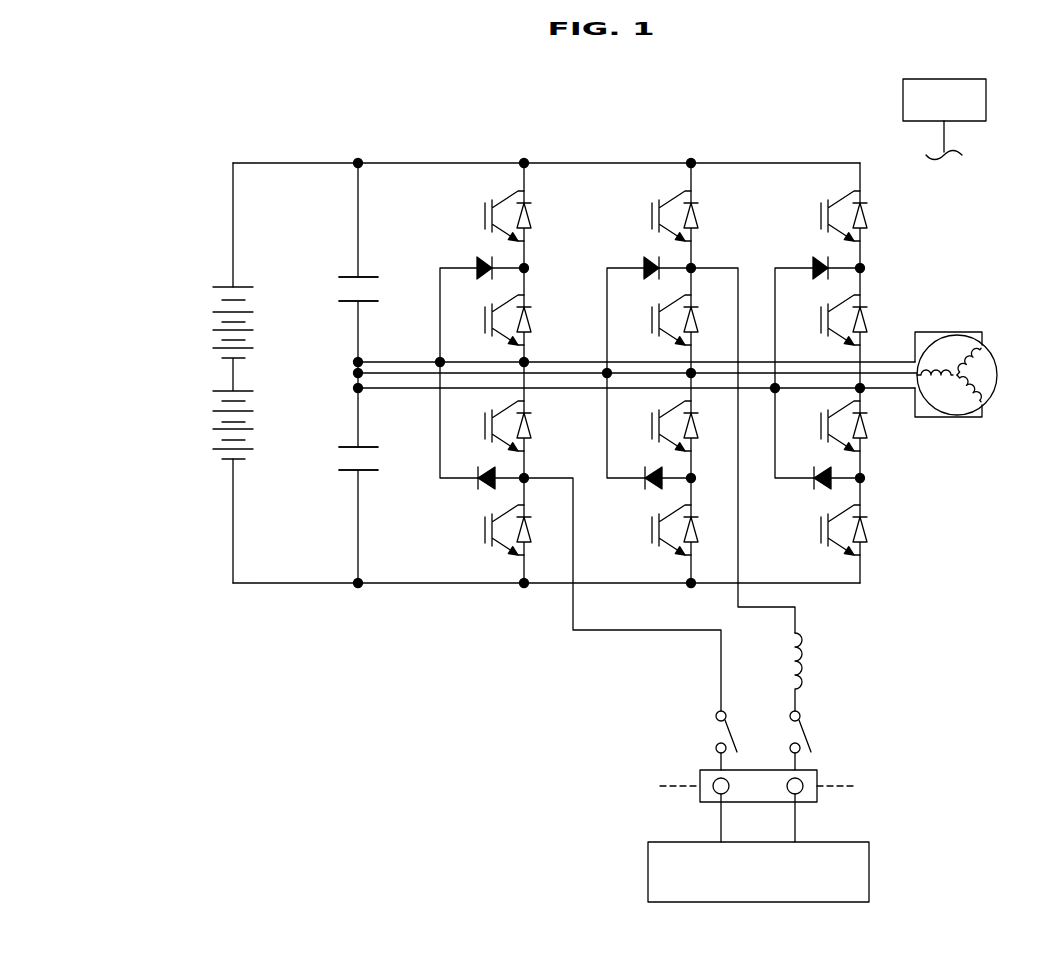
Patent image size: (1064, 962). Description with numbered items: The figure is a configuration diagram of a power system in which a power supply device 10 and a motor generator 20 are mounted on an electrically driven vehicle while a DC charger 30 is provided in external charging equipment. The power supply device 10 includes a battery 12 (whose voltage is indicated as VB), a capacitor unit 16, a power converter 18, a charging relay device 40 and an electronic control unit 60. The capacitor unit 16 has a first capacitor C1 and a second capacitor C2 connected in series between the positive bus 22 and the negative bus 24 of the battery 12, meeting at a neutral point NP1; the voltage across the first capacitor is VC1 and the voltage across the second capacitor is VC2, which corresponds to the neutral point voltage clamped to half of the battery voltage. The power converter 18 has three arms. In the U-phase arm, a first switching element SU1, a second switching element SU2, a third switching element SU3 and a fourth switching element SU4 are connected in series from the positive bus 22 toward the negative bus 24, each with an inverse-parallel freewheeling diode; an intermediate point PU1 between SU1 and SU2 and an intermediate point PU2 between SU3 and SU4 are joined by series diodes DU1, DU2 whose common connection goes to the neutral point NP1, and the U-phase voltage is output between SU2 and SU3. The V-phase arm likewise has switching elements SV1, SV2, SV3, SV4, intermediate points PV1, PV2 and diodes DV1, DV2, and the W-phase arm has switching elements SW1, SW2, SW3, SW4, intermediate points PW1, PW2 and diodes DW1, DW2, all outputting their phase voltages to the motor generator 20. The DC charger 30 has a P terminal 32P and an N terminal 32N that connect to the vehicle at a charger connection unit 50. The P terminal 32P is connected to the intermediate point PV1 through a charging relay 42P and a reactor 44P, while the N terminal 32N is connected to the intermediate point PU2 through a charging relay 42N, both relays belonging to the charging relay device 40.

The power supply device 10 is at (494, 110).
The battery 12 is at (215, 270).
The capacitor unit 16 is at (366, 131).
The power converter 18 is at (648, 131).
The motor generator 20 is at (998, 372).
The positive bus 22 is at (438, 162).
The negative bus 24 is at (443, 587).
The DC charger 30 is at (870, 872).
The N terminal 32N is at (700, 799).
The P terminal 32P is at (817, 797).
The charging relay device 40 is at (749, 721).
The charging relay 42N is at (746, 729).
The charging relay 42P is at (818, 729).
The reactor 44P is at (812, 650).
The charger connection unit 50 is at (818, 775).
The electronic control unit 60 is at (986, 98).
The first capacitor C1 is at (338, 280).
The second capacitor C2 is at (342, 488).
The voltage between terminals of the first capacitor VC1 is at (392, 313).
The voltage between terminals of the second capacitor VC2 is at (396, 440).
The neutral point NP1 is at (348, 353).
The battery voltage VB is at (207, 477).
The first switching element SU1 is at (476, 205).
The second switching element SU2 is at (472, 322).
The third switching element SU3 is at (473, 432).
The fourth switching element SU4 is at (472, 538).
The first switching element SV1 is at (643, 205).
The second switching element SV2 is at (639, 322).
The third switching element SV3 is at (640, 432).
The fourth switching element SV4 is at (639, 538).
The first switching element SW1 is at (812, 205).
The second switching element SW2 is at (808, 322).
The third switching element SW3 is at (809, 432).
The fourth switching element SW4 is at (808, 538).
The diode DU1 is at (476, 261).
The diode DU2 is at (477, 486).
The diode DV1 is at (643, 261).
The diode DV2 is at (644, 486).
The diode DW1 is at (812, 261).
The diode DW2 is at (813, 486).
The intermediate point PU1 is at (528, 266).
The intermediate point PU2 is at (528, 482).
The intermediate point PV1 is at (695, 266).
The intermediate point PV2 is at (695, 481).
The intermediate point PW1 is at (866, 268).
The intermediate point PW2 is at (866, 478).